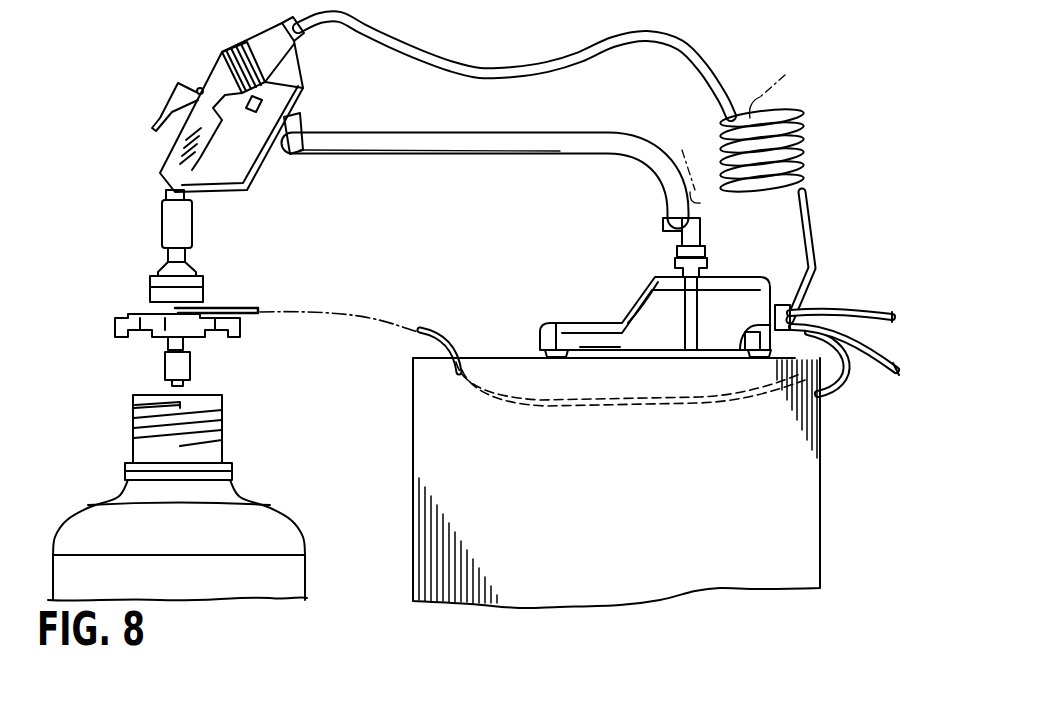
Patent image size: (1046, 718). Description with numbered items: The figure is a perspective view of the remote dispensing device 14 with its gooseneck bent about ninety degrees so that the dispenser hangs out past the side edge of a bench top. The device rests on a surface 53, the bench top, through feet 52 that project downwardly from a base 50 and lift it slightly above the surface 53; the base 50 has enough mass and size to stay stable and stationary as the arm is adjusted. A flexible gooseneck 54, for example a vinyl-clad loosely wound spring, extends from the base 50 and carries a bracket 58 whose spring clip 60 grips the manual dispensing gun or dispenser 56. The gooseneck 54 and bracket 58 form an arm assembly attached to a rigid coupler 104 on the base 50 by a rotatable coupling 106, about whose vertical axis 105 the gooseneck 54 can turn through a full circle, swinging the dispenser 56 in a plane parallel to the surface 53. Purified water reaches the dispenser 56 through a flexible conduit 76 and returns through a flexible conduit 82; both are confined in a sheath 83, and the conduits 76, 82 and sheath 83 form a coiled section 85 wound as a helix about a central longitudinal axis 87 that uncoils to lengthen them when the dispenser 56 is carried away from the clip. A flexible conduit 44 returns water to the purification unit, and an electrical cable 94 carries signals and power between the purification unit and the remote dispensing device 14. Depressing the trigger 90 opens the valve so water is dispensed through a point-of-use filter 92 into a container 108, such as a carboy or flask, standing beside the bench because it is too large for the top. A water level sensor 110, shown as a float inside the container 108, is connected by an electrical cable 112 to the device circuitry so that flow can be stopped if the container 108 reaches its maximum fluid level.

The remote dispensing device 14 is at (760, 48).
The flexible conduit 44 is at (888, 378).
The base 50 is at (631, 312).
The feet 52 is at (553, 360).
The surface 53 is at (497, 355).
The gooseneck 54 is at (608, 131).
The dispenser 56 is at (209, 112).
The bracket 58 is at (262, 172).
The spring clip 60 is at (246, 62).
The flexible conduit 76 is at (808, 266).
The flexible conduit 82 is at (808, 230).
The sheath 83 is at (498, 62).
The coiled section 85 is at (804, 132).
The central longitudinal axis 87 is at (780, 75).
The trigger 90 is at (170, 106).
The point-of-use filter 92 is at (172, 224).
The electrical cable 94 is at (858, 311).
The coupler 104 is at (680, 266).
The vertical axis 105 is at (687, 160).
The rotatable coupling 106 is at (706, 250).
The container 108 is at (122, 497).
The water level sensor 110 is at (120, 328).
The electrical cable 112 is at (418, 327).